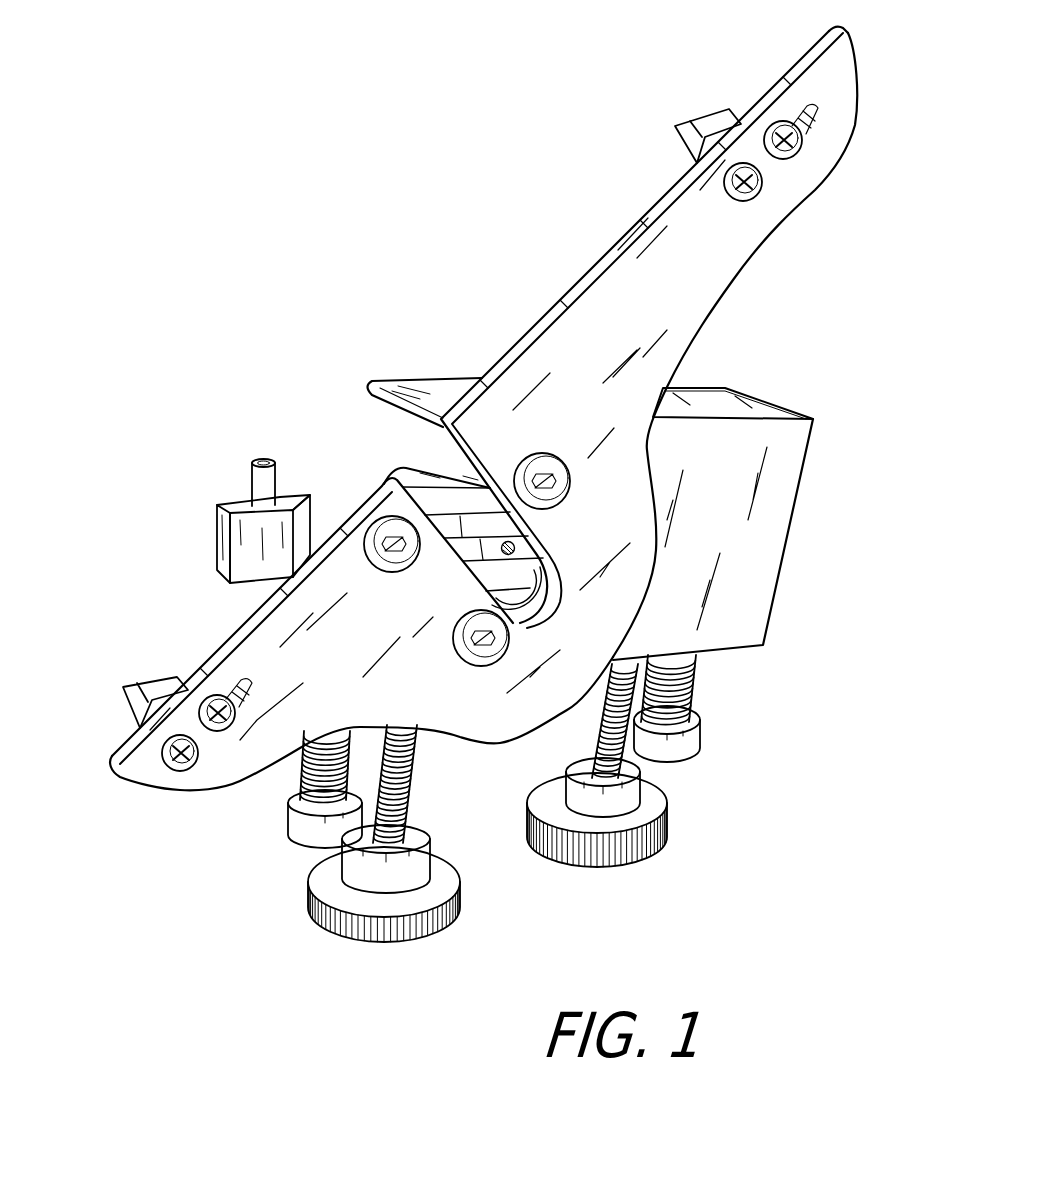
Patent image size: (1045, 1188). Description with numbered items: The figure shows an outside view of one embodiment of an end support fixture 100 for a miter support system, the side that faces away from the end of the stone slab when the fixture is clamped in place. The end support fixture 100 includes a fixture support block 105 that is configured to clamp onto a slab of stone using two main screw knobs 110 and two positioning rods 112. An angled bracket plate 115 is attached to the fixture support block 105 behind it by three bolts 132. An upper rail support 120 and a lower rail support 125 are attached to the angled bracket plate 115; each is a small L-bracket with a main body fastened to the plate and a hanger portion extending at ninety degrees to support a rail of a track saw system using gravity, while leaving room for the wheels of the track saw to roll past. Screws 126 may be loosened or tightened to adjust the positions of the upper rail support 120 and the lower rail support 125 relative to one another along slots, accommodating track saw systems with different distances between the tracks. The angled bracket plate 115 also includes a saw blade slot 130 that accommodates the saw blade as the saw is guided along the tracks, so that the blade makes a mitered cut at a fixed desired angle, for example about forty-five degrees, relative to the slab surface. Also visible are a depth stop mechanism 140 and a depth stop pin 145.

The end support fixture 100 is at (158, 394).
The fixture support block 105 is at (762, 552).
The main screw knobs 110 is at (378, 940).
The positioning rods 112 is at (298, 840).
The angled bracket plate 115 is at (683, 290).
The upper rail support 120 is at (713, 118).
The lower rail support 125 is at (158, 682).
The screws 126 is at (822, 190).
The saw blade slot 130 is at (412, 448).
The bolts 132 is at (556, 456).
The depth stop mechanism 140 is at (215, 536).
The depth stop pin 145 is at (263, 457).